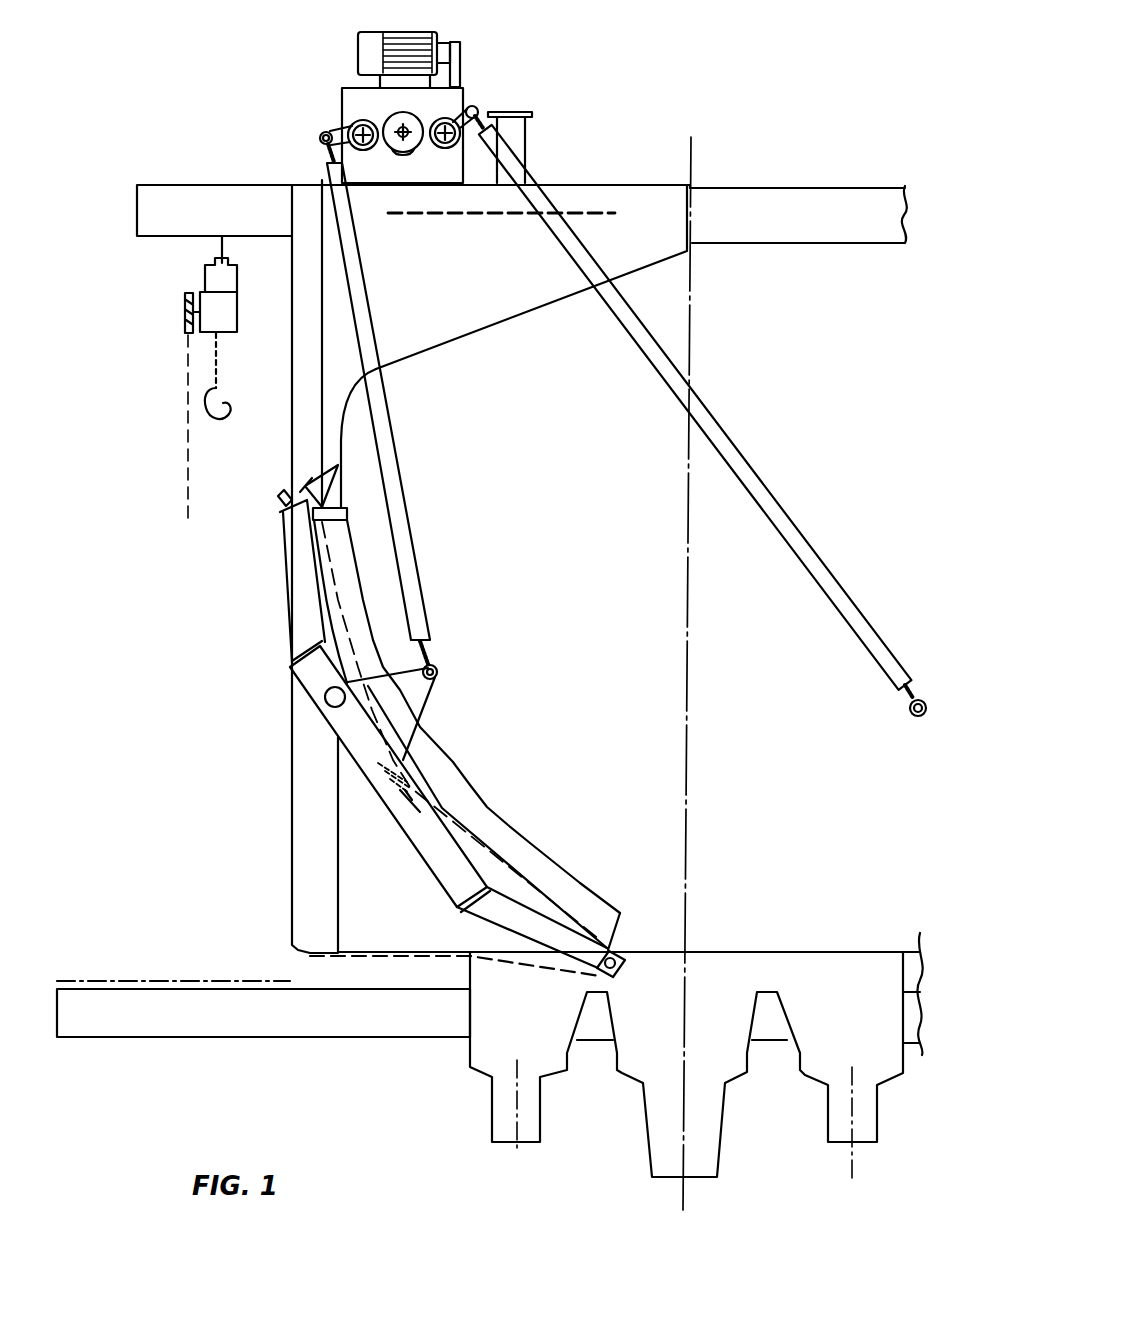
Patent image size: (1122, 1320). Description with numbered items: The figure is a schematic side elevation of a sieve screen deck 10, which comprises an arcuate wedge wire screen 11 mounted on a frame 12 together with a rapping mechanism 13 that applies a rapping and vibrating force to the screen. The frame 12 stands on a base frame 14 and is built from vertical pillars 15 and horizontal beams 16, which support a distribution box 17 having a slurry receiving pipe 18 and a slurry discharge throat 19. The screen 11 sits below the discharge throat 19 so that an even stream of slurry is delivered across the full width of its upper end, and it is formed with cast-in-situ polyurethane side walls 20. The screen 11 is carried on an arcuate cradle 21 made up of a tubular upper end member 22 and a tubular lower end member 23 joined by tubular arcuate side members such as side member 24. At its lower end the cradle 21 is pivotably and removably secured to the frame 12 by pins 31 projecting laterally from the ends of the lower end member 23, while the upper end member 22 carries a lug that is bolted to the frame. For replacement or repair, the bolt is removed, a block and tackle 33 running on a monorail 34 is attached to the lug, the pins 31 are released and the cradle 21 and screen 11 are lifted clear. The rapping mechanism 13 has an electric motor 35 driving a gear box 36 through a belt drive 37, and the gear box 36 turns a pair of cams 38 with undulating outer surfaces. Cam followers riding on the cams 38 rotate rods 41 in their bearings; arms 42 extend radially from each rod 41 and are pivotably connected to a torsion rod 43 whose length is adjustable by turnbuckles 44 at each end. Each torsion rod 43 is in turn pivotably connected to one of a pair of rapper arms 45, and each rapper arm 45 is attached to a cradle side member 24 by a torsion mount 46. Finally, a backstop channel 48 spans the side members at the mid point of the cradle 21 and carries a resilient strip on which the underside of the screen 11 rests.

The sieve screen deck 10 is at (452, 762).
The wedge wire screen 11 is at (487, 847).
The frame 12 is at (303, 812).
The rapping mechanism 13 is at (477, 82).
The base frame 14 is at (308, 1030).
The vertical pillars 15 is at (303, 727).
The horizontal beams 16 is at (722, 196).
The distribution box 17 is at (478, 315).
The slurry receiving pipe 18 is at (524, 133).
The slurry discharge throat 19 is at (328, 435).
The polyurethane side walls 20 is at (568, 890).
The arcuate cradle 21 is at (428, 845).
The upper end member 22 is at (272, 515).
The lower end member 23 is at (620, 978).
The arcuate side member 24 is at (405, 808).
The pins 31 is at (624, 955).
The block and tackle 33 is at (210, 322).
The monorail 34 is at (222, 242).
The electric motor 35 is at (400, 50).
The gear box 36 is at (357, 100).
The belt drive 37 is at (463, 62).
The cams 38 is at (394, 148).
The rods 41 is at (478, 104).
The arms 42 is at (318, 140).
The torsion rod 43 is at (410, 547).
The turnbuckles 44 is at (320, 152).
The rapper arms 45 is at (425, 698).
The torsion mount 46 is at (378, 763).
The backstop channel 48 is at (405, 790).